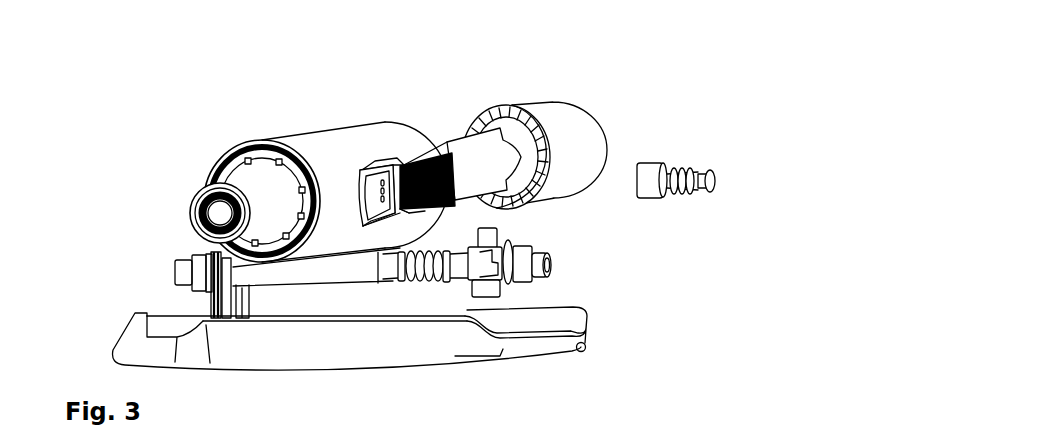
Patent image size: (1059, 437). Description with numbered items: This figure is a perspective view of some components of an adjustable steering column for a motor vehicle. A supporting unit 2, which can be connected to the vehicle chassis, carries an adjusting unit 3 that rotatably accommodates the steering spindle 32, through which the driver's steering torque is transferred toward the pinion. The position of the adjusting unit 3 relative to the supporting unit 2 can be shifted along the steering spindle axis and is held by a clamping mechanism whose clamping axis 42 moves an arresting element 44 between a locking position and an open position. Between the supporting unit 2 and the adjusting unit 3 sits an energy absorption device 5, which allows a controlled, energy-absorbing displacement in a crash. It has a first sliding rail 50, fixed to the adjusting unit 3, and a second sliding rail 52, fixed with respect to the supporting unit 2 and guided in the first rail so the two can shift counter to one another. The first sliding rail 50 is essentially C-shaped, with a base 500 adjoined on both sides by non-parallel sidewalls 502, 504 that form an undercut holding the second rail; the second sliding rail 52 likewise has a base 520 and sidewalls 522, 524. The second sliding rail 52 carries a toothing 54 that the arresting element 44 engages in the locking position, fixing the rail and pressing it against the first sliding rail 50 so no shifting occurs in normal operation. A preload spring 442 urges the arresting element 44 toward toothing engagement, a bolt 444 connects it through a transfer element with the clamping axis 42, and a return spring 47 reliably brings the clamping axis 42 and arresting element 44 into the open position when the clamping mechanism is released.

The supporting unit 2 is at (255, 350).
The adjusting unit 3 is at (305, 142).
The energy absorption device 5 is at (419, 147).
The steering spindle 32 is at (248, 195).
The clamping axis 42 is at (330, 272).
The arresting element 44 is at (652, 168).
The return spring 47 is at (386, 218).
The first sliding rail 50 is at (384, 158).
The second sliding rail 52 is at (447, 143).
The toothing 54 is at (460, 198).
The preload spring 442 is at (690, 168).
The bolt 444 is at (712, 172).
The base 500 is at (365, 170).
The sidewall 502 is at (380, 186).
The sidewall 504 is at (368, 226).
The base 520 is at (476, 294).
The sidewall 522 is at (402, 164).
The sidewall 524 is at (409, 212).